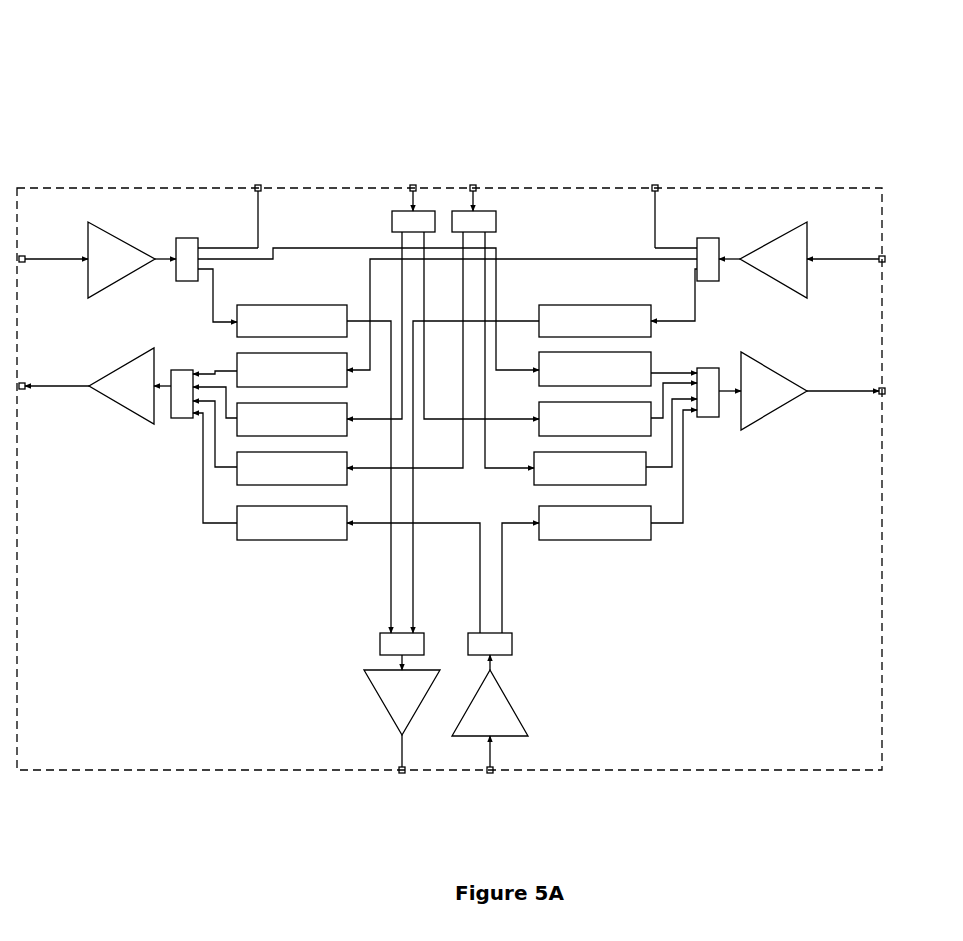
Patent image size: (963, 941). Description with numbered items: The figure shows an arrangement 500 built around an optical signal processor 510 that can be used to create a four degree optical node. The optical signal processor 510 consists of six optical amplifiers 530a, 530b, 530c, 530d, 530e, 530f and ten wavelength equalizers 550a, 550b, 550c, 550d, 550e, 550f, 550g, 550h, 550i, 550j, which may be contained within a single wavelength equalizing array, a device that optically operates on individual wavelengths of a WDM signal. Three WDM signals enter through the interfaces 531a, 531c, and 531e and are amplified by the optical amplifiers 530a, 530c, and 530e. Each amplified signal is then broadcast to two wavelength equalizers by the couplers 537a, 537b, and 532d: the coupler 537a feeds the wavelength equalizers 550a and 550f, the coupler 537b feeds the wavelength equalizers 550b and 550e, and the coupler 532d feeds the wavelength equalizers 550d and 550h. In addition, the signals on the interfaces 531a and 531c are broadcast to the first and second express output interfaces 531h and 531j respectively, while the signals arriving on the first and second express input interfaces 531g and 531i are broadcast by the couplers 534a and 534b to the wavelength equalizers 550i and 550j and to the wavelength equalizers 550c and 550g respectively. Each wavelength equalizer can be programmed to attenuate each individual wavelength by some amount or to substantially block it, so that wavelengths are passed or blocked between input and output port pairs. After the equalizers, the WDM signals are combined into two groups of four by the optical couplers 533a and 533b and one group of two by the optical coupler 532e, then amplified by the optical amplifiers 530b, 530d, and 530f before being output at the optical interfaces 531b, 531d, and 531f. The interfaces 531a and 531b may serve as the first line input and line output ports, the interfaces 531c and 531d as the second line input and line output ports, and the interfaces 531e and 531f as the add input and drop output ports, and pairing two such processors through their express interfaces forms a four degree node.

The optical node system 500 is at (77, 64).
The optical signal processor 510 is at (815, 188).
The optical amplifier 530a is at (128, 241).
The optical amplifier 530b is at (104, 374).
The optical amplifier 530c is at (810, 243).
The optical amplifier 530d is at (800, 384).
The optical amplifier 530e is at (500, 688).
The optical amplifier 530f is at (370, 670).
The input interface 531a is at (25, 264).
The output interface 531b is at (26, 392).
The input interface 531c is at (880, 264).
The output interface 531d is at (880, 396).
The input interface 531e is at (494, 768).
The output interface 531f is at (406, 768).
The input interface 531g is at (416, 190).
The interface 531h is at (261, 192).
The input interface 531i is at (477, 190).
The interface 531j is at (659, 191).
The coupler 532d is at (510, 633).
The optical coupler 532e is at (418, 633).
The optical coupler 533a is at (700, 368).
The optical coupler 533b is at (179, 370).
The coupler 534a is at (392, 213).
The coupler 534b is at (496, 228).
The coupler 537a is at (186, 239).
The coupler 537b is at (720, 246).
The wavelength equalizer 550a is at (339, 330).
The wavelength equalizer 550b is at (340, 379).
The wavelength equalizer 550c is at (339, 478).
The wavelength equalizer 550d is at (340, 533).
The wavelength equalizer 550e is at (642, 330).
The wavelength equalizer 550f is at (636, 378).
The wavelength equalizer 550g is at (639, 475).
The wavelength equalizer 550h is at (642, 533).
The wavelength equalizer 550i is at (333, 429).
The wavelength equalizer 550j is at (638, 428).